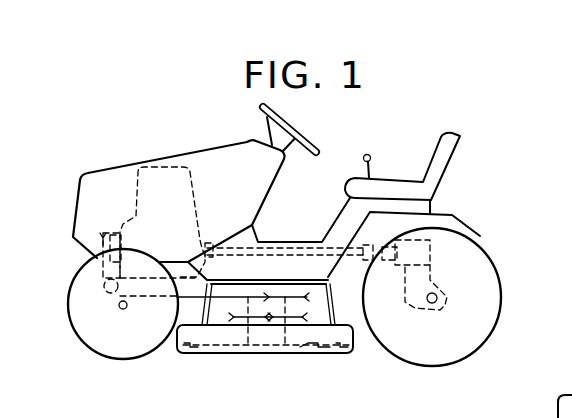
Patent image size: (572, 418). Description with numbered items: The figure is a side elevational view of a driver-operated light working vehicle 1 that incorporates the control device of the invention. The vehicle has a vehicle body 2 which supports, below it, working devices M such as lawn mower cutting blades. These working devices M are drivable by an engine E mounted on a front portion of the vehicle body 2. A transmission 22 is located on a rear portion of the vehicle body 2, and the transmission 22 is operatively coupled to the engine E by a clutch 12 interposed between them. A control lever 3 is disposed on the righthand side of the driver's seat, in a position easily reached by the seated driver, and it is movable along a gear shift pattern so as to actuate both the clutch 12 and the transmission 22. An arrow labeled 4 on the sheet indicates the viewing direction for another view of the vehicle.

The lawn and garden tractor 1 is at (203, 151).
The frame 2 is at (290, 240).
The control lever 3 is at (370, 154).
The engine E is at (158, 168).
The mower deck M is at (237, 353).
The drive linkage 12 is at (383, 240).
The transaxle 22 is at (443, 258).
The section view direction of FIG. 4 is at (534, 379).